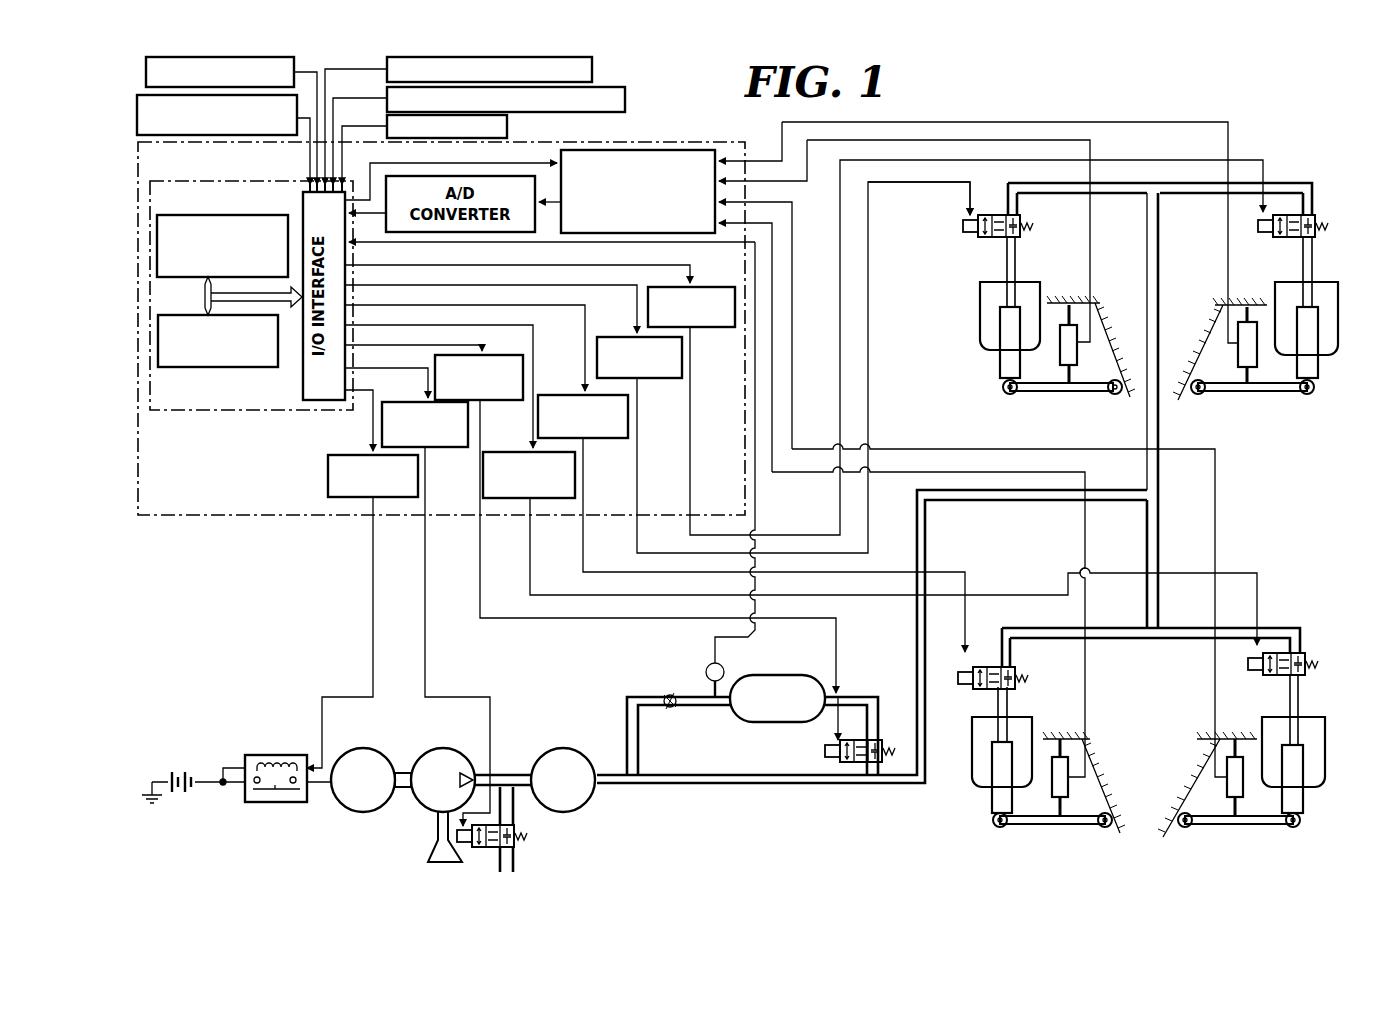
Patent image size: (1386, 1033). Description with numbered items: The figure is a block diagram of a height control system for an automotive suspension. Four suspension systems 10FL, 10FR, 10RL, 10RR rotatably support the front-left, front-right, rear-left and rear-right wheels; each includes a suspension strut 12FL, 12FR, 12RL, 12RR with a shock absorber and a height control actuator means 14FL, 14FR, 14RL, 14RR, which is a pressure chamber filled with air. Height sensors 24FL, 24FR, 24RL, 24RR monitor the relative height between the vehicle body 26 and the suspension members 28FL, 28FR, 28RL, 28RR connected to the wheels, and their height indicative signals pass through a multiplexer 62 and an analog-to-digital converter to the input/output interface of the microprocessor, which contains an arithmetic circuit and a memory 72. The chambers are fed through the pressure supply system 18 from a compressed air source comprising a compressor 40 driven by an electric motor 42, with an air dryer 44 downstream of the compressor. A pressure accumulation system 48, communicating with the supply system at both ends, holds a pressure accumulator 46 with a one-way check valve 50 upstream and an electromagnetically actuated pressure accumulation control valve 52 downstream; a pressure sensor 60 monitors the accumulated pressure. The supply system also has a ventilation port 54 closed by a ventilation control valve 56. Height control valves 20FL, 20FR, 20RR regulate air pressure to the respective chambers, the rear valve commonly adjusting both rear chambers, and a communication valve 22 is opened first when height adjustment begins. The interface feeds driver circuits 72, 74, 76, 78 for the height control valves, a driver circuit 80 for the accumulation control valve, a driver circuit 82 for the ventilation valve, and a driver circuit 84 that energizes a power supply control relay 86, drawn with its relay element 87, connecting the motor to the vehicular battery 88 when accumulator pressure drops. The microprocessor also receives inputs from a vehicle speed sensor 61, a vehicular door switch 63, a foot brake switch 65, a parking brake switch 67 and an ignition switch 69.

The front-left suspension system 10FL is at (1091, 537).
The front-right suspension system 10FR is at (1279, 353).
The rear-left suspension system 10RL is at (1011, 794).
The rear-right suspension system 10RR is at (1261, 781).
The front-left suspension strut 12FL is at (1000, 362).
The front-right suspension strut 12FR is at (1308, 360).
The rear-left suspension strut 12RL is at (990, 800).
The rear-right suspension strut 12RR is at (1300, 797).
The front-left height control actuator means 14FL is at (990, 303).
The front-right height control actuator means 14FR is at (1330, 297).
The rear-left height control actuator means 14RL is at (977, 730).
The rear-right height control actuator means 14RR is at (1317, 728).
The pressure supply system 18 is at (928, 525).
The front-left height control valve means 20FL is at (1015, 238).
The front-right height control valve means 20FR is at (1310, 215).
The rear-right height control valve means 20RR is at (1308, 653).
The communication valve 22 is at (1013, 668).
The front-left height sensor 24FL is at (1077, 357).
The front-right height sensor 24FR is at (1235, 358).
The rear-left height sensor 24RL is at (1080, 788).
The rear-right height sensor 24RR is at (1227, 793).
The vehicle body 26 is at (1107, 322).
The front-left suspension member 28FL is at (1042, 393).
The front-right suspension member 28FR is at (1270, 391).
The rear-left suspension member 28RL is at (1035, 827).
The rear-right suspension member 28RR is at (1255, 827).
The compressor 40 is at (450, 752).
The electric motor 42 is at (370, 805).
The air dryer 44 is at (563, 748).
The pressure accumulator 46 is at (785, 675).
The pressure accumulation system 48 is at (840, 690).
The one-way check valve 50 is at (668, 695).
The pressure accumulation control valve 52 is at (880, 745).
The ventilation port 54 is at (513, 870).
The ventilation control valve 56 is at (483, 850).
The pressure sensor 60 is at (708, 668).
The vehicle speed sensor 61 is at (293, 93).
The multiplexer 62 is at (672, 150).
The vehicular door switch 63 is at (249, 66).
The foot brake switch 65 is at (594, 69).
The parking brake switch 67 is at (626, 98).
The ignition switch 69 is at (508, 128).
The driver circuit 72 is at (230, 367).
The driver circuit 74 is at (706, 287).
The driver circuit 76 is at (512, 452).
The driver circuit 78 is at (559, 395).
The driver circuit 80 is at (506, 352).
The driver circuit 82 is at (440, 447).
The driver circuit 84 is at (340, 455).
The power supply control relay 86 is at (288, 802).
The relay coil 87 is at (273, 752).
The vehicular battery 88 is at (185, 795).